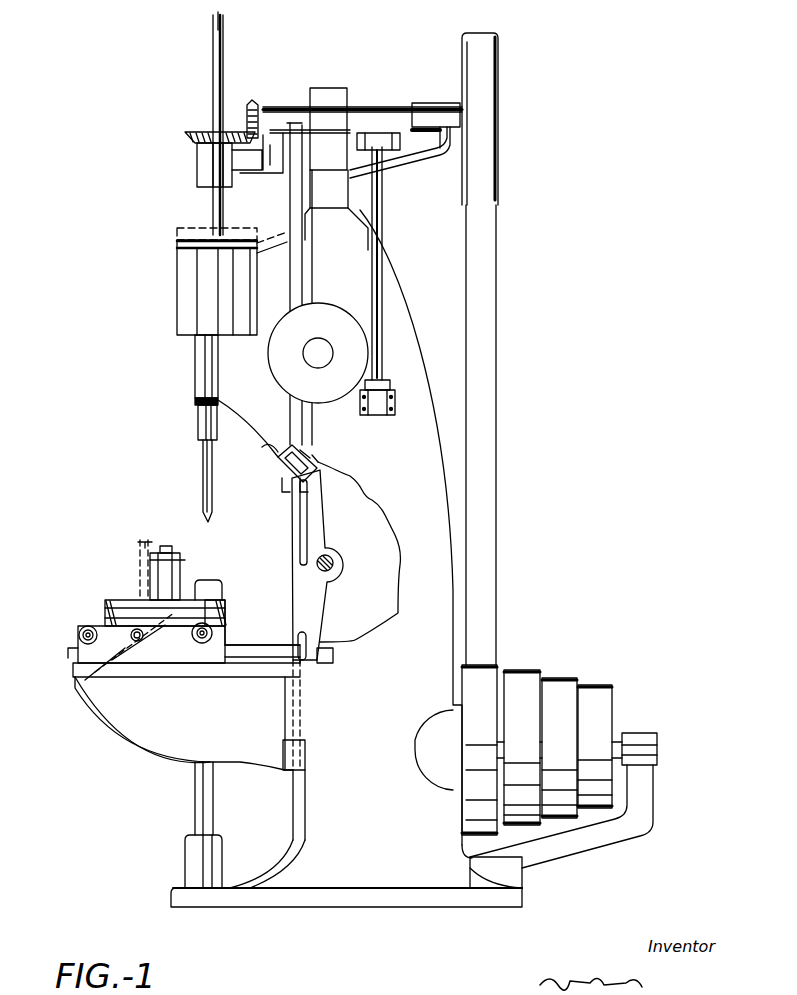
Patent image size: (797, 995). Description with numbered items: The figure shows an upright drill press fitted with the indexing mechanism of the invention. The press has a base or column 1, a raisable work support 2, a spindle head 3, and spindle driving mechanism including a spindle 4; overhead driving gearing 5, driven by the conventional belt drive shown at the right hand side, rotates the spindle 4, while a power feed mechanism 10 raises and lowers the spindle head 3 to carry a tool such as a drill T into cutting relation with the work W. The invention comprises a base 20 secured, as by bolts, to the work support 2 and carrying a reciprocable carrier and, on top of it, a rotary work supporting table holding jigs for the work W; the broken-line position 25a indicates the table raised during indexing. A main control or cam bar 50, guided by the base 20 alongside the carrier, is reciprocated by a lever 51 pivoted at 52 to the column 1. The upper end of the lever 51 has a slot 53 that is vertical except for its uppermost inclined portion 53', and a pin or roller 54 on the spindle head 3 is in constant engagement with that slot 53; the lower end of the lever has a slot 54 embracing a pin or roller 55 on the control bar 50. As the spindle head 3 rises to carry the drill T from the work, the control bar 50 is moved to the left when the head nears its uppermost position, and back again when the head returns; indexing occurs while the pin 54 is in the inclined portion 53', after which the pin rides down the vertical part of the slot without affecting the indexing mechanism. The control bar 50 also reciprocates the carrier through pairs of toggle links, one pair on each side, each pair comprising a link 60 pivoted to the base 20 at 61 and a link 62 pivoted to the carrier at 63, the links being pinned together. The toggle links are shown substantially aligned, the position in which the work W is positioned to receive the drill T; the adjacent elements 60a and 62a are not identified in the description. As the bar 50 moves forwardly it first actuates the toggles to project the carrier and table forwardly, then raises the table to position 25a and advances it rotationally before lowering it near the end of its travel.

The column 1 is at (428, 468).
The work support 2 is at (186, 775).
The spindle head 3 is at (232, 304).
The spindle 4 is at (200, 422).
The overhead driving gearing 5 is at (240, 130).
The power feed mechanism 10 is at (383, 337).
The base 20 is at (78, 655).
The raised table position 25a is at (128, 598).
The main control or cam bar 50 is at (247, 655).
The lever 51 is at (318, 534).
The pivot 52 is at (334, 563).
The slot 53 is at (285, 522).
The inclined slot portion 53' is at (274, 463).
The pin or roller 54 is at (322, 470).
The pin or roller 55 is at (297, 652).
The link 60 is at (112, 630).
The carriage guide 60a is at (113, 633).
The pivot 61 is at (85, 628).
The link 62 is at (157, 645).
The roller 62a is at (178, 645).
The pivot 63 is at (210, 612).
The drill T is at (200, 490).
The work W is at (210, 585).